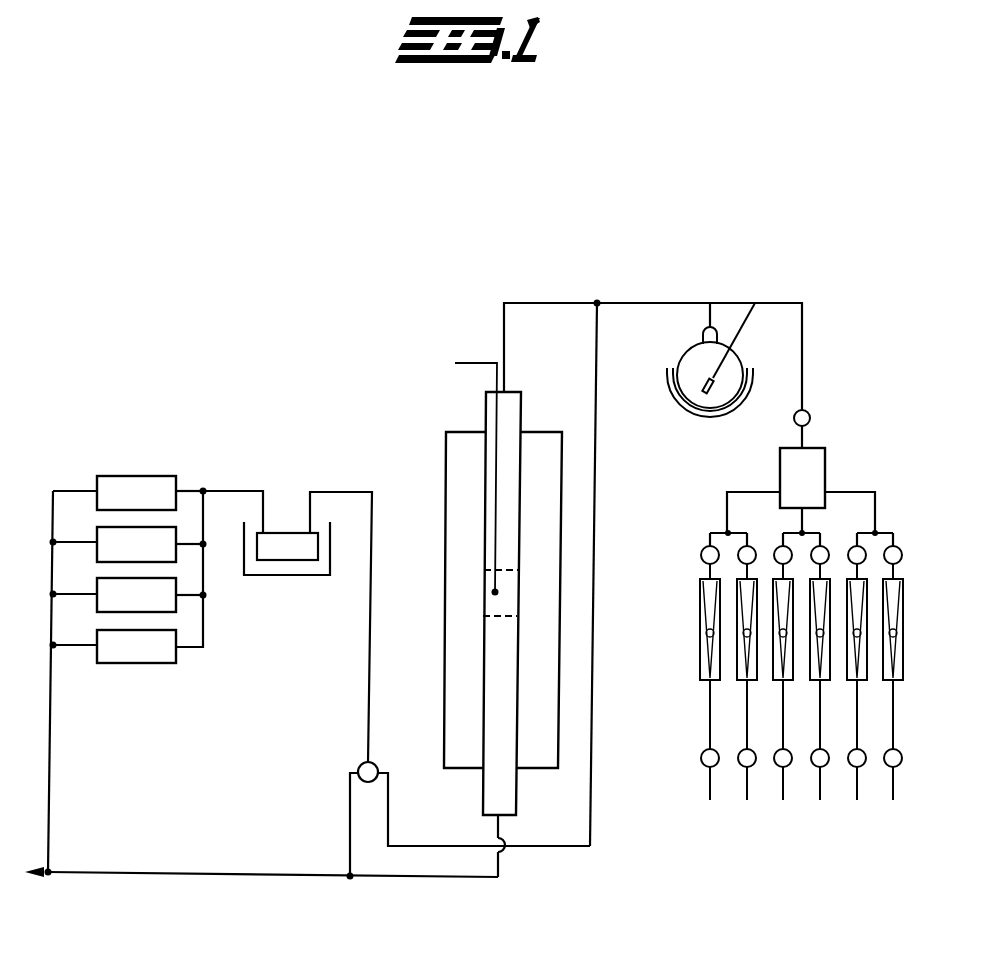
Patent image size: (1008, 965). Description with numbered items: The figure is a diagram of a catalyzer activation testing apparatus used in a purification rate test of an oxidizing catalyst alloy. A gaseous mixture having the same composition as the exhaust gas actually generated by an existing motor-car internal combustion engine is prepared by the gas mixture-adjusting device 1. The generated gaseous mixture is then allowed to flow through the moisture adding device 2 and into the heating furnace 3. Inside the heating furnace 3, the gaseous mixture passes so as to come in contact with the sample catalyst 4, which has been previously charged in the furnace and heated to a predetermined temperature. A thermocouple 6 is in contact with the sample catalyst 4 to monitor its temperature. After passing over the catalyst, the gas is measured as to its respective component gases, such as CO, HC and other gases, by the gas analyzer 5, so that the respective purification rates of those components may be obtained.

The gas mixture-adjusting device 1 is at (841, 463).
The moisture adding device 2 is at (693, 398).
The heating furnace 3 is at (445, 601).
The sample catalyst 4 is at (508, 593).
The gas analyzer 5 is at (142, 462).
The thermocouple 6 is at (473, 362).